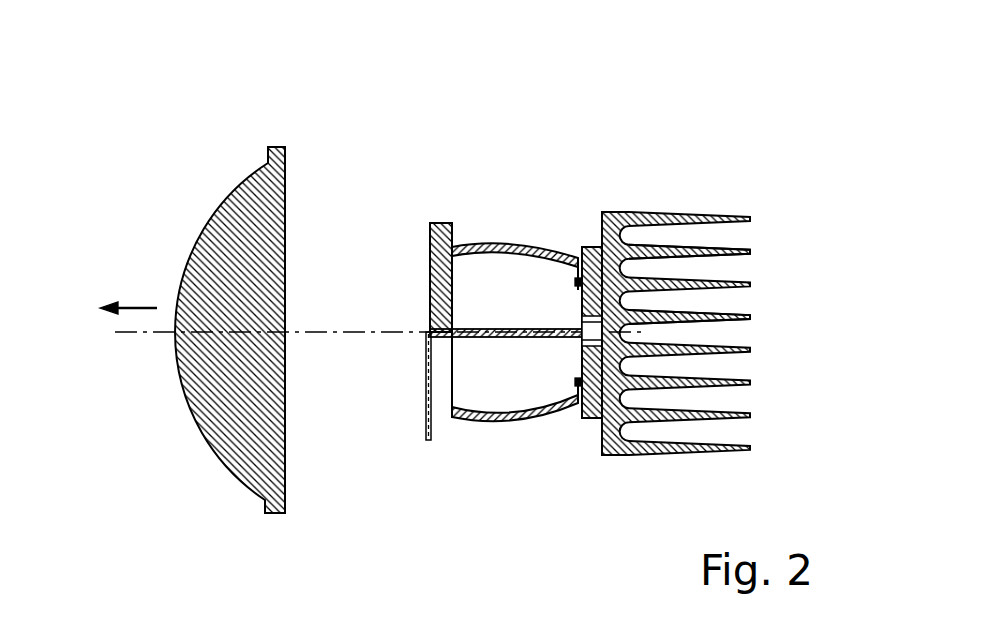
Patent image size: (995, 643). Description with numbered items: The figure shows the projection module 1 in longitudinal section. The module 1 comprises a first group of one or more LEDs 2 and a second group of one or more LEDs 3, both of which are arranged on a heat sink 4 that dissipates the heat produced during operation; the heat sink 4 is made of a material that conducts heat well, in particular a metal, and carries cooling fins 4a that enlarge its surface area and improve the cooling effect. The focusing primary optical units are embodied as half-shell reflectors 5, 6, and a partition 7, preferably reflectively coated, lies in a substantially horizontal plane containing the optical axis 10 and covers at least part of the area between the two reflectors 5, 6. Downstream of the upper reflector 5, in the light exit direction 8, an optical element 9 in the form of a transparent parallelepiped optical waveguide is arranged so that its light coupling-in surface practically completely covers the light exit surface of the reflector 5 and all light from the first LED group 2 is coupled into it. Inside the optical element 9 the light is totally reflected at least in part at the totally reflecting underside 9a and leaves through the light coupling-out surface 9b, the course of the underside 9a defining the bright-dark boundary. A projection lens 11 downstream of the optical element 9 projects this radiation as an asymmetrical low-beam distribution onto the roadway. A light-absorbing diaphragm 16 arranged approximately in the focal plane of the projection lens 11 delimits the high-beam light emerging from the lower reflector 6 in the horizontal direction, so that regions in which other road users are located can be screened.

The projection module 1 is at (582, 120).
The first group of LEDs 2 is at (590, 247).
The second group of LEDs 3 is at (590, 420).
The heat sink 4 is at (700, 262).
The cooling fins 4a is at (733, 311).
The reflector 5 is at (518, 243).
The reflector 6 is at (510, 422).
The partition 7 is at (548, 328).
The light exit direction 8 is at (137, 306).
The optical element 9 is at (442, 268).
The totally reflecting underside 9a is at (440, 349).
The light coupling-out surface 9b is at (416, 305).
The optical axis 10 is at (322, 338).
The projection lens 11 is at (230, 443).
The light-absorbing diaphragm 16 is at (425, 415).